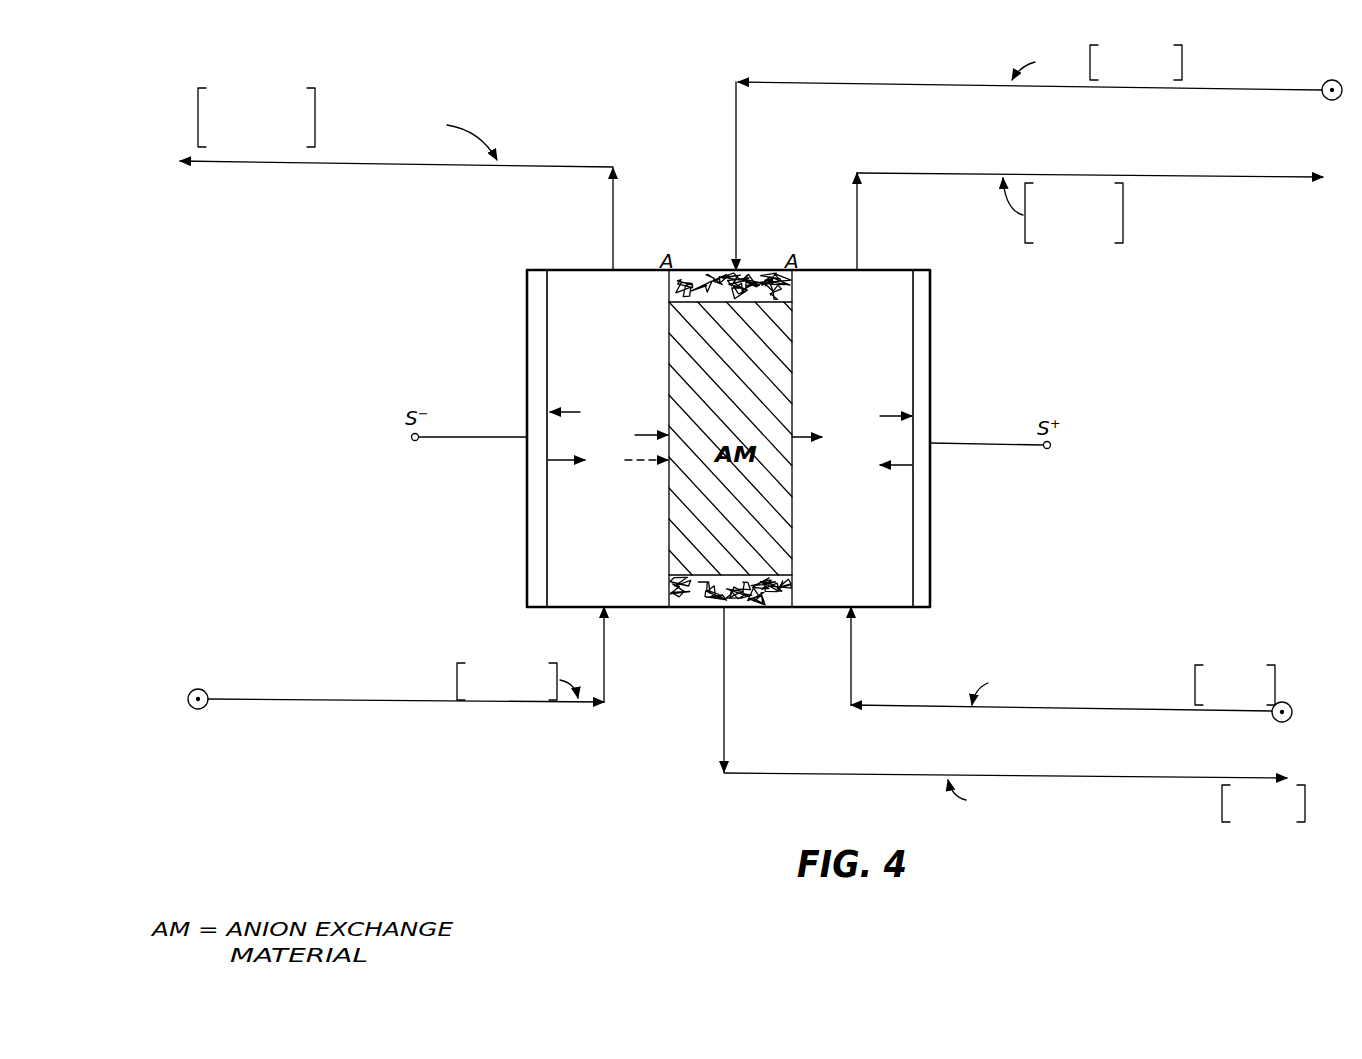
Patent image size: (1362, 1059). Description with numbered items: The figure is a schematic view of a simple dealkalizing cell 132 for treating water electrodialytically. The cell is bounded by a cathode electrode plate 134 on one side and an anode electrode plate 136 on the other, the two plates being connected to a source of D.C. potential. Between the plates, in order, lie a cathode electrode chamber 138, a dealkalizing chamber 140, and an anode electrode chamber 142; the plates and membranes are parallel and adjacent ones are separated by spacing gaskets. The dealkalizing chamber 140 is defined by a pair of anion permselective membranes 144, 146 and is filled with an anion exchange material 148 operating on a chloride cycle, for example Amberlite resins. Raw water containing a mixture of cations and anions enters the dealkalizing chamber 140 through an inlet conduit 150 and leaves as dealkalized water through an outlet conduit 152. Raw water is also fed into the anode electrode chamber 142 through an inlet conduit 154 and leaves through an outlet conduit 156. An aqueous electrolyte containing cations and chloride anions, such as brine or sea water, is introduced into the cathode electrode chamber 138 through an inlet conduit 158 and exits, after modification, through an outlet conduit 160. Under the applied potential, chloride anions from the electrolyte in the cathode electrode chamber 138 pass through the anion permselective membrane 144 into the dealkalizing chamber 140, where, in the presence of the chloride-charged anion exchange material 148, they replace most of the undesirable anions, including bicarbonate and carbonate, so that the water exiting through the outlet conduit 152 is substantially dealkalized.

The dealkalizing cell 132 is at (1003, 562).
The cathode electrode plate 134 is at (527, 535).
The anode electrode plate 136 is at (932, 337).
The cathode electrode chamber 138 is at (565, 563).
The dealkalizing chamber 140 is at (704, 598).
The anode electrode chamber 142 is at (884, 598).
The anion permselective membrane 144 is at (668, 332).
The anion permselective membrane 146 is at (793, 358).
The anion exchange material 148 is at (783, 520).
The inlet conduit 150 is at (830, 83).
The outlet conduit 152 is at (795, 777).
The inlet conduit 154 is at (928, 708).
The outlet conduit 156 is at (965, 172).
The inlet conduit 158 is at (565, 703).
The outlet conduit 160 is at (450, 165).